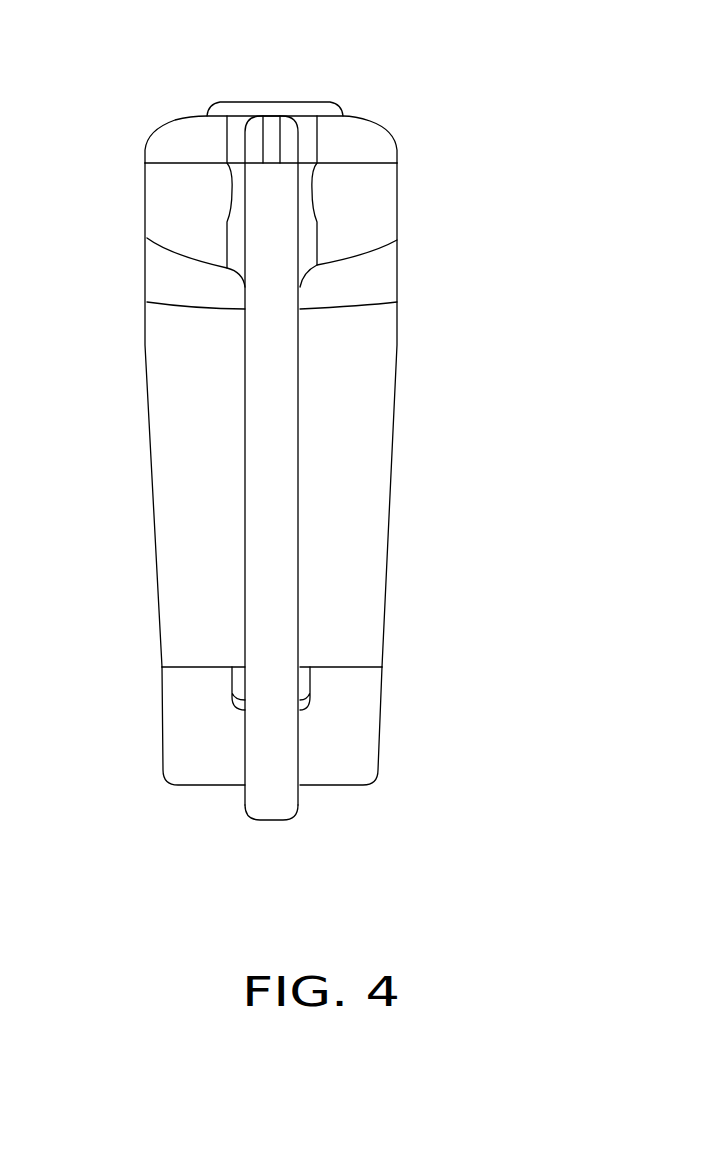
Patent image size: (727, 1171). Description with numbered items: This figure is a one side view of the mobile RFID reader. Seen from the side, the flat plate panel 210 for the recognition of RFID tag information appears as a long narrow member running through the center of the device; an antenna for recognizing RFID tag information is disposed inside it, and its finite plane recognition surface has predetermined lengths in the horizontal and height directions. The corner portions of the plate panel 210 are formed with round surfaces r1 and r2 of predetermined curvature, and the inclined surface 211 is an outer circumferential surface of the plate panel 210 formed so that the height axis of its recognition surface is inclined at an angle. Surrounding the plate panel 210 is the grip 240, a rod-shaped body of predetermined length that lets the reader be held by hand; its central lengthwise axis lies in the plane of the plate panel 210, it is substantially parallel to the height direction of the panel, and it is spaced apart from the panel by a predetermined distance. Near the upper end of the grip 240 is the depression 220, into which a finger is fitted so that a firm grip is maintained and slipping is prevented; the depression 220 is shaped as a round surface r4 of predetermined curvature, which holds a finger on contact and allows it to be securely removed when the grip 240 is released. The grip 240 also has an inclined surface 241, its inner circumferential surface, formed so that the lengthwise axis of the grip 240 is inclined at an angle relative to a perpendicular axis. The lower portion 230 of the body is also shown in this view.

The plate panel for the recognition of RFID tag information 210 is at (307, 540).
The inclined surface 211 is at (272, 630).
The depression 220 is at (310, 277).
The lower base portion 230 is at (397, 480).
The grip 240 is at (400, 333).
The inclined surface 241 is at (345, 420).
The round surface r1 is at (273, 127).
The round surface r2 is at (265, 788).
The round surface r4 is at (188, 285).